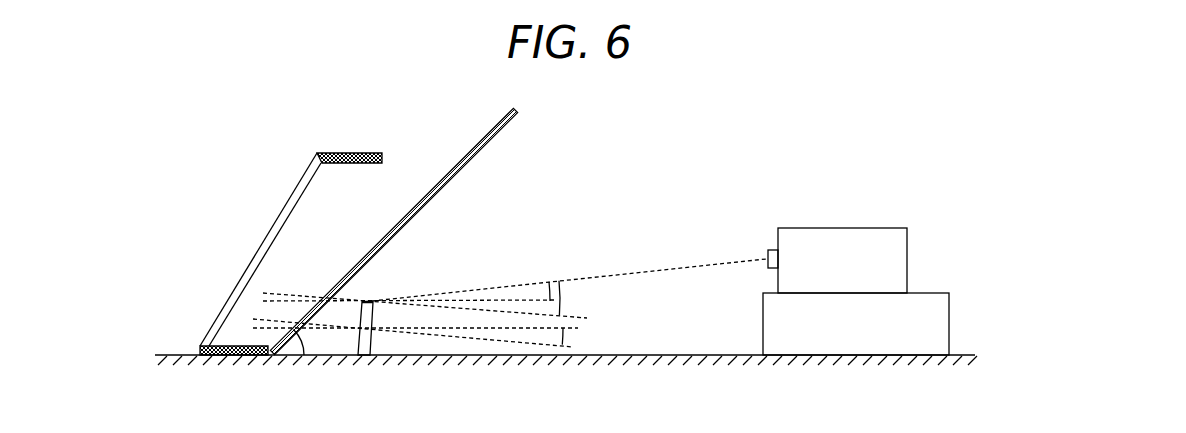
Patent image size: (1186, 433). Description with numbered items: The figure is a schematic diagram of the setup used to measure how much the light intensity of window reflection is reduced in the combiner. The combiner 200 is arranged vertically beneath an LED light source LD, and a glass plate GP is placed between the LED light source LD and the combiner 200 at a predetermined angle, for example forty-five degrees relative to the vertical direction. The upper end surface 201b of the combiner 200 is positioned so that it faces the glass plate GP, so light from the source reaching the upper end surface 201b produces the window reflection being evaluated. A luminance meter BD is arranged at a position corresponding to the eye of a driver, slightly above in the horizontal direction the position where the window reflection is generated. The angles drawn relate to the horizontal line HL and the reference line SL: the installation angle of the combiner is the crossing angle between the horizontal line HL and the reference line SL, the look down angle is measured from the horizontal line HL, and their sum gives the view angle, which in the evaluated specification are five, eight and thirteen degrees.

The LED light source LD is at (347, 164).
The glass plate GP is at (458, 172).
The combiner 200 is at (373, 338).
The upper end surface 201b is at (370, 301).
The horizontal line HL is at (475, 325).
The reference line SL is at (542, 346).
The luminance meter BD is at (857, 276).